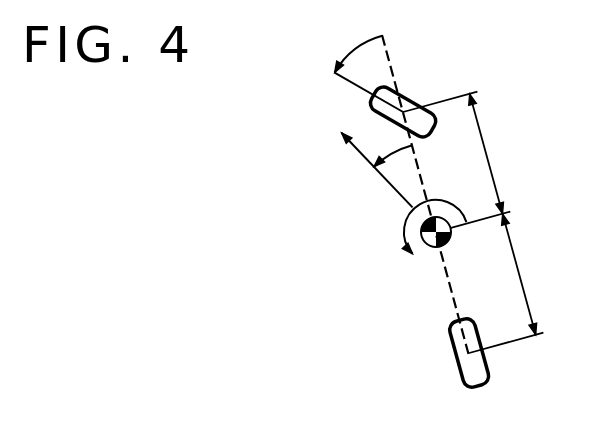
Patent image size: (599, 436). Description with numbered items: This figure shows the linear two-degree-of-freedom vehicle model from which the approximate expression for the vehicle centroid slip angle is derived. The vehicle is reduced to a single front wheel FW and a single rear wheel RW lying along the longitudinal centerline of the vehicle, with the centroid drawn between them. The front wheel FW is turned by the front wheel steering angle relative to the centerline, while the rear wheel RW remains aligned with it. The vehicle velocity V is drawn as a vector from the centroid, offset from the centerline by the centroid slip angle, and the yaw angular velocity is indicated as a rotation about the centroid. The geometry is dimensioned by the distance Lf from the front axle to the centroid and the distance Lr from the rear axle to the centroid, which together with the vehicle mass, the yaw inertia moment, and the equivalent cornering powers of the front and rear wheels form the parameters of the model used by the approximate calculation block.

The front wheel FW is at (410, 99).
The rear wheel RW is at (457, 348).
The vehicle velocity V is at (367, 155).
The distance from the front axle to the centroid Lf is at (460, 160).
The distance from the rear axle to the centroid Lr is at (510, 283).